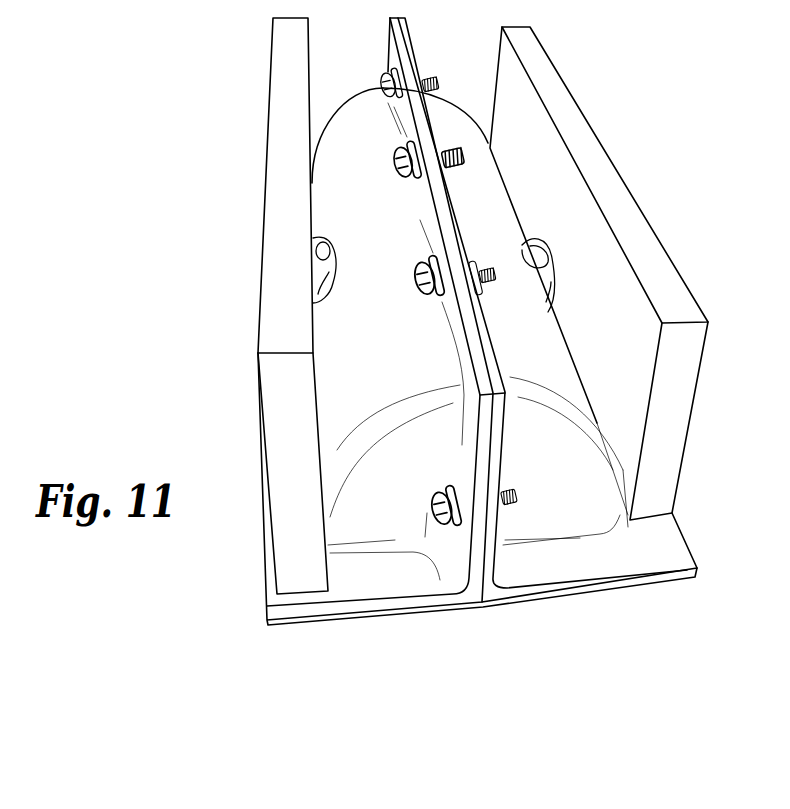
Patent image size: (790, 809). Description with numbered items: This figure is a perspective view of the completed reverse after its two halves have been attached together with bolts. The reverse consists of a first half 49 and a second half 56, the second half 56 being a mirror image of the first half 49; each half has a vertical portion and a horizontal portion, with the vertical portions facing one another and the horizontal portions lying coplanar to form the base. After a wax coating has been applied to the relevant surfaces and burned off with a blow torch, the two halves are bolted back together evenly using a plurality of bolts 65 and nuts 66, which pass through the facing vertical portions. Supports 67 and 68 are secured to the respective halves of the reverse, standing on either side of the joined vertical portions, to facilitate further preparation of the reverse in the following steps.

The first half of the reverse 49 is at (538, 628).
The second half of the reverse 56 is at (403, 627).
The bolts 65 is at (428, 262).
The nuts 66 is at (484, 268).
The support 67 is at (292, 102).
The support 68 is at (570, 122).